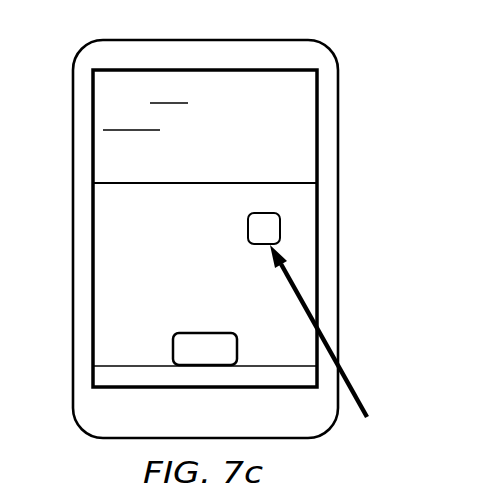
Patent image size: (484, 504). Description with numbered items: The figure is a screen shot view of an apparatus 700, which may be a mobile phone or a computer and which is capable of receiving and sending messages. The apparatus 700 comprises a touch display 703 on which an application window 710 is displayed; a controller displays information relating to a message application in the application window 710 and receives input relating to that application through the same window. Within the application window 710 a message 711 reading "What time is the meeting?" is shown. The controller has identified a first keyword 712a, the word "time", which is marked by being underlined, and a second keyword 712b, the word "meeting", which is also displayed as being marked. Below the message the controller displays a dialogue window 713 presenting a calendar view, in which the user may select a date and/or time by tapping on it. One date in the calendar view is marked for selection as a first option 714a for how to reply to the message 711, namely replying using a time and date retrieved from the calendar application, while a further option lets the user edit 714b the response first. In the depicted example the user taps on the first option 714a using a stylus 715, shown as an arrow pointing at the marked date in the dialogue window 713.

The apparatus 700 is at (347, 125).
The touch display 703 is at (339, 213).
The application window 710 is at (92, 149).
The message 711 is at (203, 80).
The first keyword 712a is at (172, 80).
The second keyword 712b is at (182, 118).
The dialogue window 713 is at (92, 283).
The first option 714a is at (263, 212).
The edit option 714b is at (237, 350).
The stylus 715 is at (355, 383).